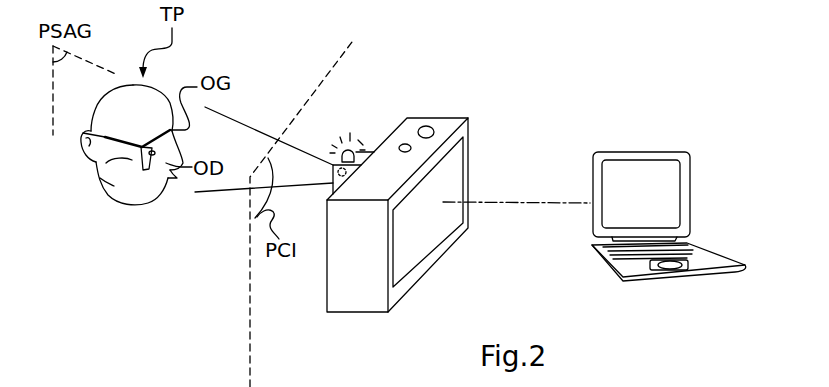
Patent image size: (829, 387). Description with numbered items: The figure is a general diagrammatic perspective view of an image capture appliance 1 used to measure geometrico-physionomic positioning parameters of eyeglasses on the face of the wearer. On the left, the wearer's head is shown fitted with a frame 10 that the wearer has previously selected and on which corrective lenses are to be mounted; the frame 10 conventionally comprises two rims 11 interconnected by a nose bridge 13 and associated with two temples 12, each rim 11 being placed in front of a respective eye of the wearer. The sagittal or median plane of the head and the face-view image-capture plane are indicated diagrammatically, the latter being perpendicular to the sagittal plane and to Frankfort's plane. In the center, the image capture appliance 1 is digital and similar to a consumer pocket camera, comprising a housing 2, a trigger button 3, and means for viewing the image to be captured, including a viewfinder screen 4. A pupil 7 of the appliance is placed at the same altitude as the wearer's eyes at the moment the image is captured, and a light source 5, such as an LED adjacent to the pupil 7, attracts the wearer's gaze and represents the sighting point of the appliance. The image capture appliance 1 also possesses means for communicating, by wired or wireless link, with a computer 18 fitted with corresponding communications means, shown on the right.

The image capture appliance 1 is at (308, 326).
The housing 2 is at (370, 303).
The trigger button 3 is at (426, 126).
The viewfinder screen 4 is at (408, 262).
The light source 5 is at (352, 150).
The pupil 7 is at (334, 171).
The frame 10 is at (139, 186).
The rims 11 is at (107, 182).
The temples 12 is at (112, 133).
The nose bridge 13 is at (170, 130).
The computer 18 is at (653, 128).